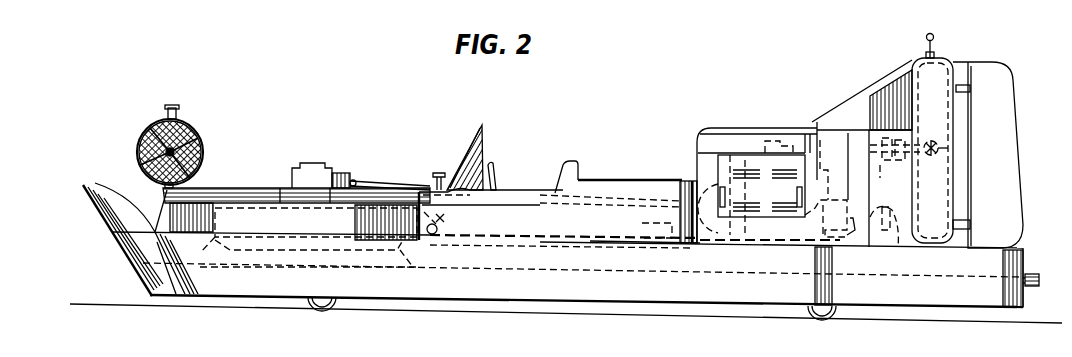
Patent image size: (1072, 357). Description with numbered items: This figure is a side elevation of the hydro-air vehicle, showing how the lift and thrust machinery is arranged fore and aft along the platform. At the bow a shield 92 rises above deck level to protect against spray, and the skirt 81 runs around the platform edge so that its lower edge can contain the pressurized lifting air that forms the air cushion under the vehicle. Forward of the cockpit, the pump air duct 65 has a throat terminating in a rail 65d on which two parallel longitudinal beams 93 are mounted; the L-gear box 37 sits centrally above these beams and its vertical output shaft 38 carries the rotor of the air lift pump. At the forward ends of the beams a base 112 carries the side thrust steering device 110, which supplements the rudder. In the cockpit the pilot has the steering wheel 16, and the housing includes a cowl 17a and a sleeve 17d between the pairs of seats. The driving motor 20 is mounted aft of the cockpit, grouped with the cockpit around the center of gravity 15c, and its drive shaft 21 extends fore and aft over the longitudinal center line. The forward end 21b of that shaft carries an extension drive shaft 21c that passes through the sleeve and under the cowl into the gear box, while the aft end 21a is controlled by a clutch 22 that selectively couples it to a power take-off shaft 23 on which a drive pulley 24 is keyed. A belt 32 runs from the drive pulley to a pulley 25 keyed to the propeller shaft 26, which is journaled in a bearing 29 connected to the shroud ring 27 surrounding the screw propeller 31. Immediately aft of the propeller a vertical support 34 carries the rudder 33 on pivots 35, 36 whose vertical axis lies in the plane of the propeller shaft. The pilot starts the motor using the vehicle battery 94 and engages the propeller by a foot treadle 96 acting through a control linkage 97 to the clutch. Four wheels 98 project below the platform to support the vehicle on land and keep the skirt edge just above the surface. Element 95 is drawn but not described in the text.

The center of gravity 15c is at (696, 257).
The steering wheel 16 is at (497, 187).
The cowl 17a is at (428, 190).
The sleeve 17d is at (532, 190).
The driving motor 20 is at (755, 130).
The drive shaft 21 is at (718, 181).
The aft end of the motor drive shaft 21a is at (808, 213).
The forward end of the drive shaft 21b is at (697, 183).
The extension drive shaft 21c is at (372, 184).
The clutch 22 is at (862, 236).
The power take-off shaft 23 is at (892, 196).
The drive pulley 24 is at (898, 241).
The pulley 25 is at (885, 138).
The propeller shaft 26 is at (896, 140).
The shroud ring 27 is at (926, 78).
The bearing 29 is at (905, 140).
The screw propeller 31 is at (946, 143).
The belt 32 is at (890, 172).
The rudder 33 is at (1003, 178).
The vertical support 34 is at (963, 63).
The rudder pivot 35 is at (968, 90).
The rudder pivot 36 is at (969, 224).
The L-gear box 37 is at (316, 175).
The output shaft 38 is at (308, 205).
The pump air duct 65 is at (215, 208).
The rail 65d is at (417, 237).
The skirt 81 is at (516, 285).
The shield 92 is at (103, 197).
The longitudinal beams 93 is at (280, 196).
The vehicle battery 94 is at (658, 241).
The strut 95 is at (493, 171).
The foot treadle 96 is at (447, 214).
The control linkage 97 is at (578, 237).
The wheels 98 is at (325, 312).
The side thrust steering device 110 is at (209, 132).
The base 112 is at (200, 186).